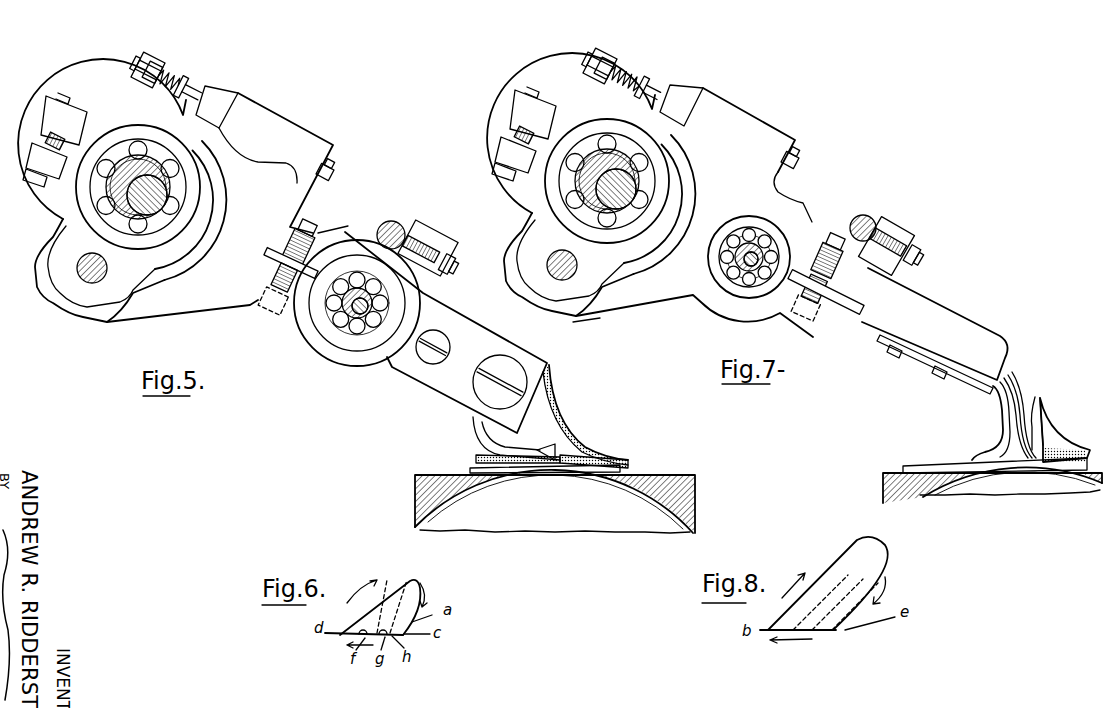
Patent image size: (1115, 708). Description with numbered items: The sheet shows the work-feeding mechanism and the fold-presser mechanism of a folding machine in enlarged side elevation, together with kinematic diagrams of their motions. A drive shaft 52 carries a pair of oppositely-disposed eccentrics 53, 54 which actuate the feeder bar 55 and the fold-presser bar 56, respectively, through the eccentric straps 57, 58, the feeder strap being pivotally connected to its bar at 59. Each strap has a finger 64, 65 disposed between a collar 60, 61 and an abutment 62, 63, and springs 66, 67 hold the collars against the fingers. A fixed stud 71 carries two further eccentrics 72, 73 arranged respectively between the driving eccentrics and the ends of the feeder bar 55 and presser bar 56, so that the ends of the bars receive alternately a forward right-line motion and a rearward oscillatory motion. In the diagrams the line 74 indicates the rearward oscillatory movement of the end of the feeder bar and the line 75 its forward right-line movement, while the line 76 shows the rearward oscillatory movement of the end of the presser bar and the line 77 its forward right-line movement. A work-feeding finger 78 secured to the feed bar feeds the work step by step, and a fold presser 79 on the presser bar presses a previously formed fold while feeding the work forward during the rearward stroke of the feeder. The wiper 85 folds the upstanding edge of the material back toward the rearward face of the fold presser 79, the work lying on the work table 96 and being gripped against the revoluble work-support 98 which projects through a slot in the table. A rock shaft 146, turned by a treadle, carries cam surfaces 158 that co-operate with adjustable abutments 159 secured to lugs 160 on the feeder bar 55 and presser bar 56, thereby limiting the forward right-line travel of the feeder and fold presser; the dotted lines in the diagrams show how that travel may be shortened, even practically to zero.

In FIG. 5, the drive shaft 52 is at (172, 189).
In FIG. 7, the drive shaft 52 is at (641, 179).
In FIG. 5, the eccentric 53 is at (108, 194).
In FIG. 7, the eccentric 54 is at (578, 177).
In FIG. 5, the feeder bar 55 is at (537, 365).
In FIG. 7, the feeder bar 55 is at (578, 322).
In FIG. 7, the fold-presser bar 56 is at (935, 308).
In FIG. 5, the eccentric strap 57 is at (117, 280).
In FIG. 7, the eccentric strap 58 is at (580, 282).
In FIG. 5, the pivotal connection 59 is at (88, 280).
In FIG. 7, the pivotal connection 59 is at (580, 273).
In FIG. 5, the collar 60 is at (184, 100).
In FIG. 7, the collar 61 is at (645, 98).
In FIG. 5, the abutment 62 is at (214, 103).
In FIG. 7, the abutment 63 is at (685, 94).
In FIG. 5, the finger 64 is at (190, 104).
In FIG. 7, the finger 65 is at (662, 98).
In FIG. 5, the spring 66 is at (162, 76).
In FIG. 7, the spring 67 is at (617, 74).
In FIG. 5, the stud 71 is at (349, 323).
In FIG. 7, the stud 71 is at (766, 262).
In FIG. 5, the eccentric 72 is at (335, 308).
In FIG. 7, the eccentric 73 is at (757, 243).
In FIG. 6, the line 74 is at (365, 633).
In FIG. 6, the line 75 is at (352, 637).
In FIG. 8, the line 76 is at (813, 578).
In FIG. 8, the line 77 is at (838, 630).
In FIG. 5, the work-feeding finger 78 is at (590, 450).
In FIG. 7, the work-feeding finger 78 is at (1073, 438).
In FIG. 5, the fold presser 79 is at (496, 443).
In FIG. 7, the fold presser 79 is at (1005, 427).
In FIG. 7, the wiper 85 is at (1035, 397).
In FIG. 5, the work table 96 is at (653, 477).
In FIG. 7, the work table 96 is at (903, 490).
In FIG. 5, the revoluble work-support 98 is at (512, 517).
In FIG. 7, the revoluble work-support 98 is at (977, 484).
In FIG. 5, the rock shaft 146 is at (420, 230).
In FIG. 5, the cam surface 158 is at (389, 222).
In FIG. 7, the cam surface 158 is at (865, 216).
In FIG. 5, the adjustable abutment 159 is at (410, 240).
In FIG. 7, the adjustable abutment 159 is at (873, 218).
In FIG. 5, the lug 160 is at (448, 252).
In FIG. 7, the lug 160 is at (903, 233).